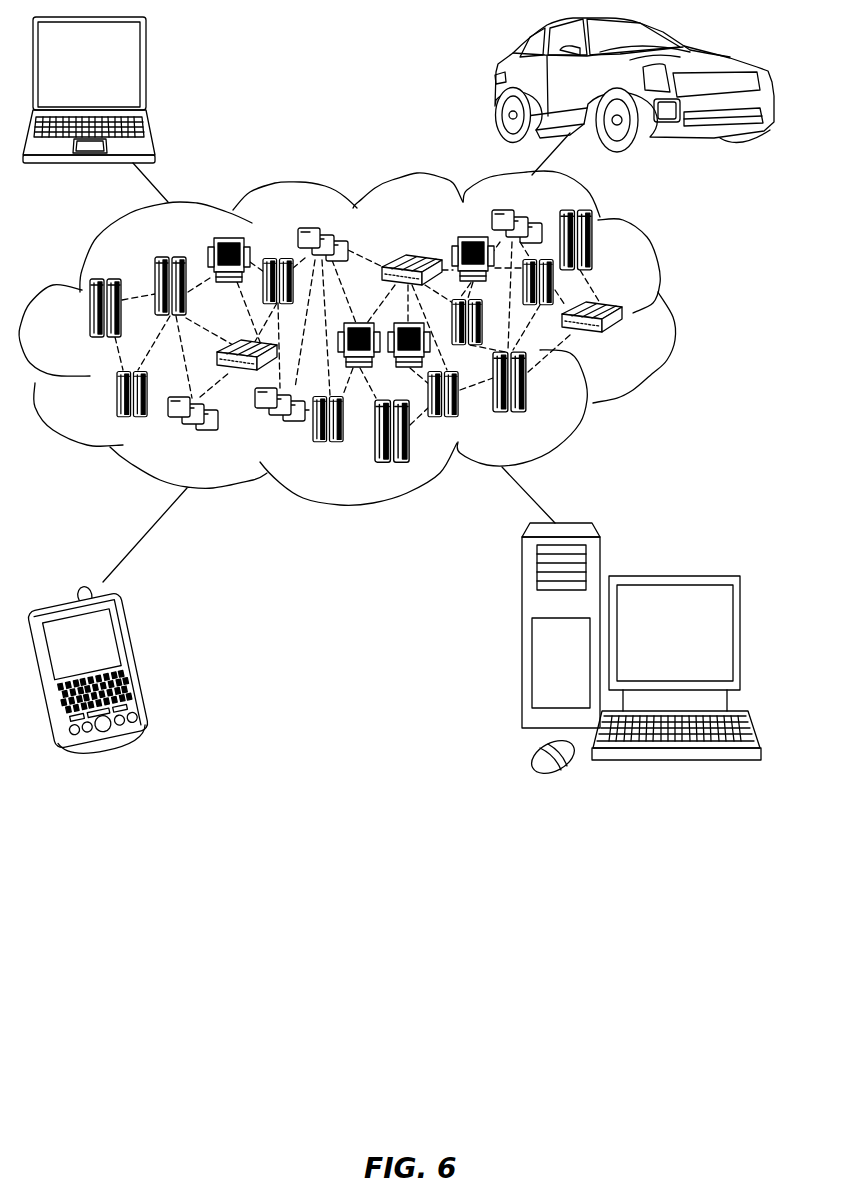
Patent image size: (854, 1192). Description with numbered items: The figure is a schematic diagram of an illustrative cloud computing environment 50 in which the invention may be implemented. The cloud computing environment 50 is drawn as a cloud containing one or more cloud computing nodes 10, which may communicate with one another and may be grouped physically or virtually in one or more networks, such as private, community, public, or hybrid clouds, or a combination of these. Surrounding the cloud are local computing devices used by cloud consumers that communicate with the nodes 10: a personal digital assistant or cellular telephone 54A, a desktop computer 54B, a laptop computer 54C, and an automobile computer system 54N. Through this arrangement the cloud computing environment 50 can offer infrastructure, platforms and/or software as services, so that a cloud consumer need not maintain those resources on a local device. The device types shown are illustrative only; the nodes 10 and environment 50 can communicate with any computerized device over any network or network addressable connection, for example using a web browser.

The cloud computing node 10 is at (630, 349).
The cloud computing environment 50 is at (675, 315).
The personal digital assistant or cellular telephone 54A is at (138, 659).
The desktop computer 54B is at (672, 575).
The laptop computer 54C is at (145, 73).
The automobile computer system 54N is at (497, 86).